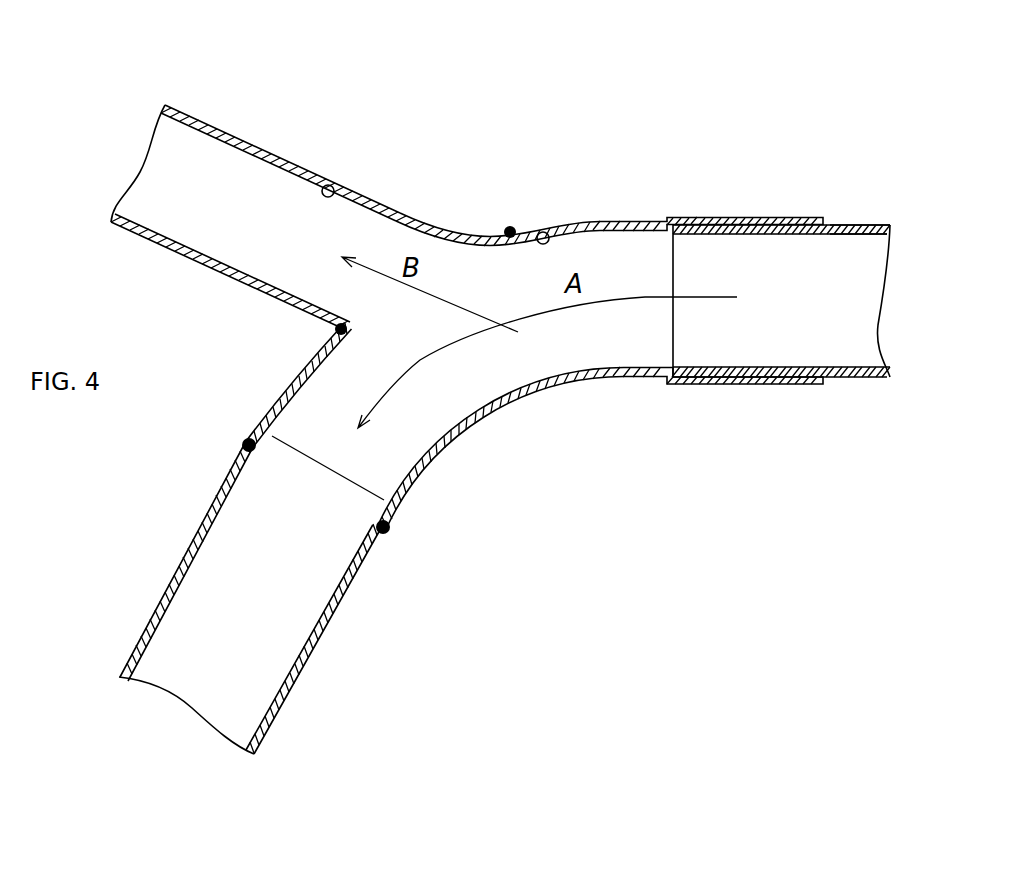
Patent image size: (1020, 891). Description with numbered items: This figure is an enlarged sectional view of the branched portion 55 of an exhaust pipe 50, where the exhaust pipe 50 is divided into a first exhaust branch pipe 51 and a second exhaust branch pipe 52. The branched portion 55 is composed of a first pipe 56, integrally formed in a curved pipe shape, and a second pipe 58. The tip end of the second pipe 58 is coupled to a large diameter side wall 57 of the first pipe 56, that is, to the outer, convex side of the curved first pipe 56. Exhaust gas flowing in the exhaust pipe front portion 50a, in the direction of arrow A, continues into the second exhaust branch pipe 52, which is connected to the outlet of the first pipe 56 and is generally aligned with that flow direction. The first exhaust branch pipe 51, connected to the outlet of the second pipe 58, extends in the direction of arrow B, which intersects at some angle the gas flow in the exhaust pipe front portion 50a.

The exhaust pipe 50 is at (785, 201).
The exhaust pipe front portion 50a is at (862, 222).
The first exhaust branch pipe 51 is at (262, 181).
The second exhaust branch pipe 52 is at (303, 662).
The branched portion 55 is at (532, 336).
The first pipe 56 is at (503, 404).
The large diameter side wall 57 is at (546, 232).
The second pipe 58 is at (339, 186).